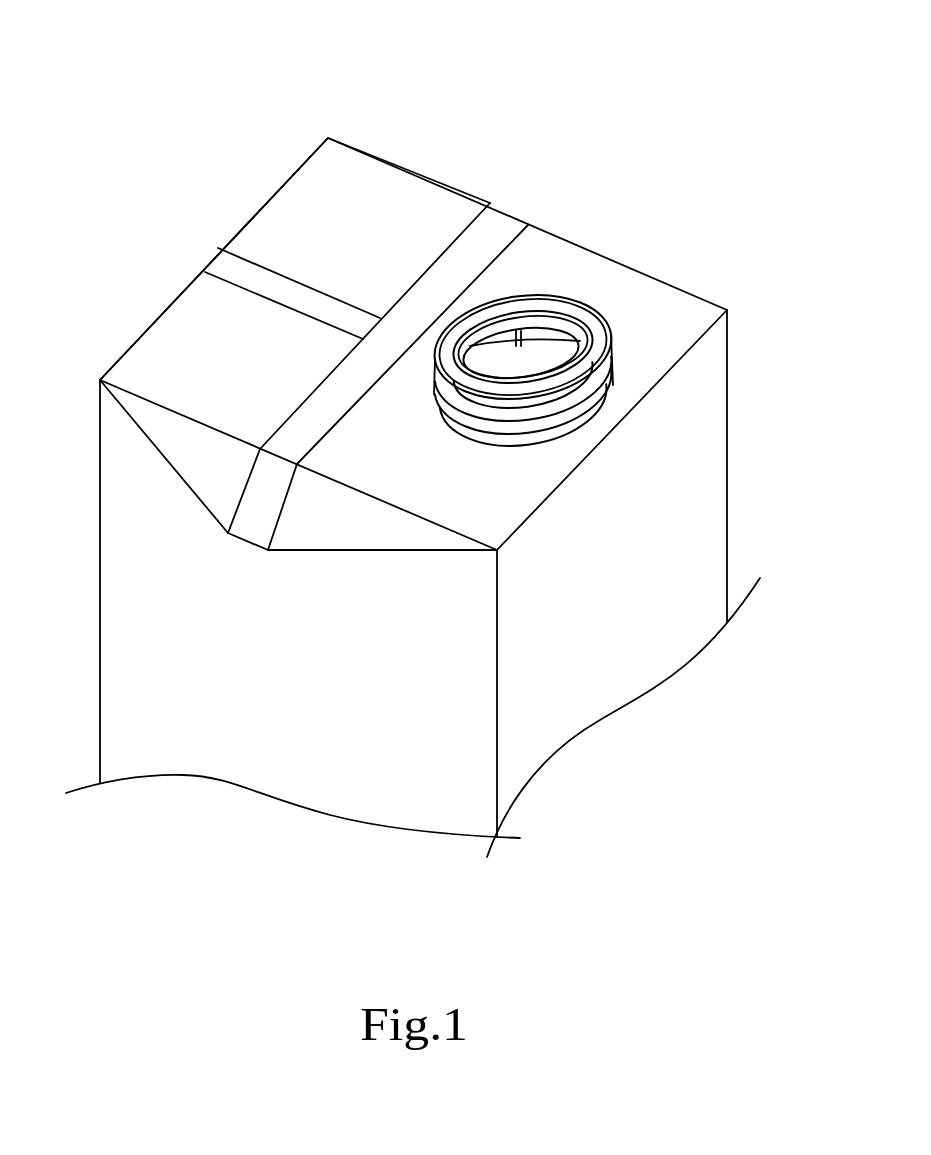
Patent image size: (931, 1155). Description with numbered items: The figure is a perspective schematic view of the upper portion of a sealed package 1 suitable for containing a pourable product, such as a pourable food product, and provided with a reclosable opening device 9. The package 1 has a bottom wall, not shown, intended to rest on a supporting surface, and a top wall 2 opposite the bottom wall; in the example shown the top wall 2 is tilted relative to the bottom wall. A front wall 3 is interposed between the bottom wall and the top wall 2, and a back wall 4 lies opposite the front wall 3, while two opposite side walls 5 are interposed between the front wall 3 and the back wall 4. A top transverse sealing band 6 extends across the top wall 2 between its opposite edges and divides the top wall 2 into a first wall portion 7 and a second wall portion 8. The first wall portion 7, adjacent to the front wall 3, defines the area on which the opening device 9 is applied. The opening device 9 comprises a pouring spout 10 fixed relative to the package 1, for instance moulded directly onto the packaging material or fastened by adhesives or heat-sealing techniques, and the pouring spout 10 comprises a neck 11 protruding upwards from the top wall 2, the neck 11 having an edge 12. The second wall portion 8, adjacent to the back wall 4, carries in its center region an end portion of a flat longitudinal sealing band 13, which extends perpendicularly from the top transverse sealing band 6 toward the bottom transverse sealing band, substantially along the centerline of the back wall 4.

The sealed package 1 is at (676, 187).
The top wall 2 is at (675, 323).
The front wall 3 is at (623, 623).
The back wall 4 is at (135, 313).
The side walls 5 is at (427, 170).
The top transverse sealing band 6 is at (482, 243).
The first wall portion 7 is at (452, 485).
The second wall portion 8 is at (327, 202).
The opening device 9 is at (545, 280).
The pouring spout 10 is at (613, 340).
The neck 11 is at (580, 403).
The edge of the neck 12 is at (585, 318).
The longitudinal sealing band 13 is at (238, 275).